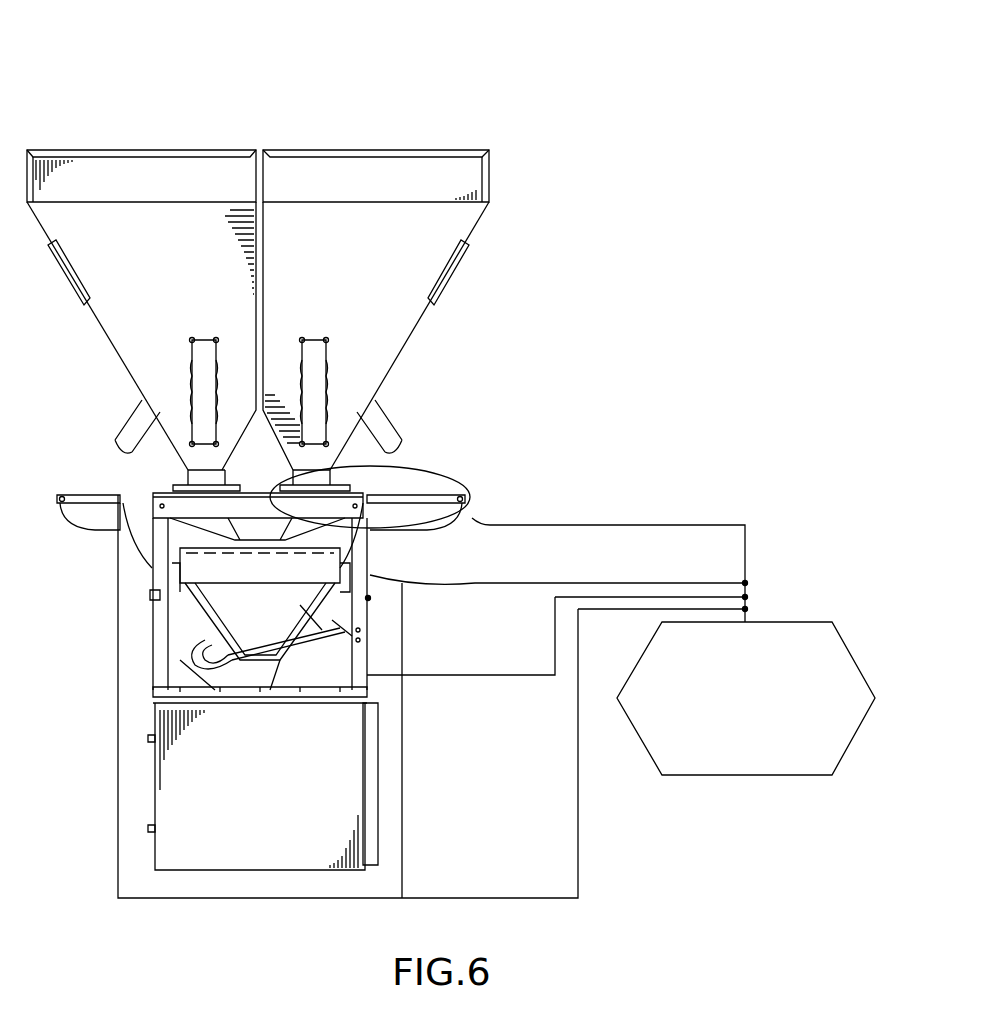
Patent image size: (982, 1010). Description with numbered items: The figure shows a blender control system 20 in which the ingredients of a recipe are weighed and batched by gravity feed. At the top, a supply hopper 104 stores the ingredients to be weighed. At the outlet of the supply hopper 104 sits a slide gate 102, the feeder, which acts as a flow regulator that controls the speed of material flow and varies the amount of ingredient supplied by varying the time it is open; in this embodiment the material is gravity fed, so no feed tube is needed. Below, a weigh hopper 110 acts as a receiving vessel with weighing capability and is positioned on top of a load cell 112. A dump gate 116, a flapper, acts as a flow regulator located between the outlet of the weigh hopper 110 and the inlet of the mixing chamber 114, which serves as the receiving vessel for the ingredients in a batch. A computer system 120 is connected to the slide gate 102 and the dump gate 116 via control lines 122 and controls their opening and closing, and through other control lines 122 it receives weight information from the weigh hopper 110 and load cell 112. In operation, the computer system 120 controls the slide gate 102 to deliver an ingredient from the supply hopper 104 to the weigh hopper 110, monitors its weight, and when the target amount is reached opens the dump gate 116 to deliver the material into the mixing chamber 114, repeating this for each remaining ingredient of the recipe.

The blender control system 20 is at (285, 80).
The slide gate 102 is at (430, 470).
The supply hopper 104 is at (440, 232).
The weigh hopper 110 is at (368, 598).
The load cell 112 is at (158, 580).
The mixing chamber 114 is at (343, 776).
The dump gate 116 is at (345, 650).
The computer system 120 is at (749, 762).
The control lines 122 is at (613, 524).